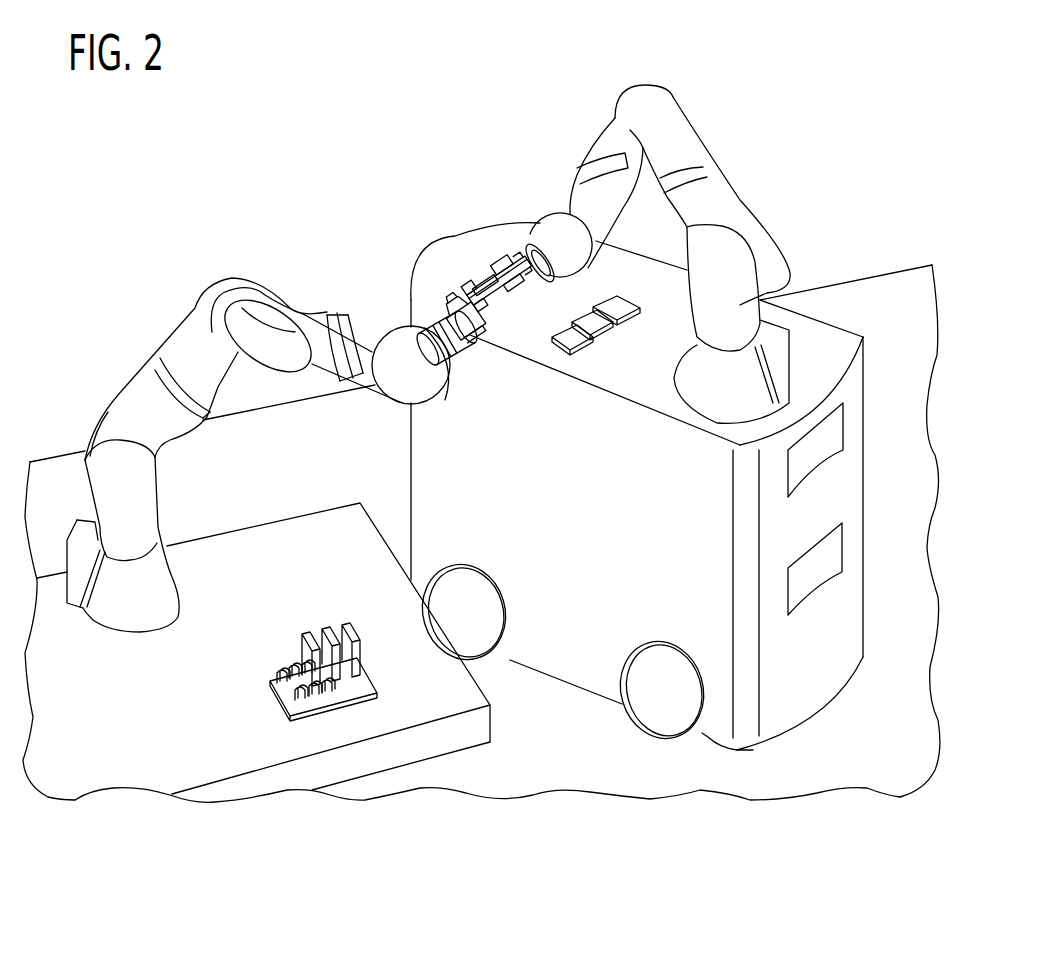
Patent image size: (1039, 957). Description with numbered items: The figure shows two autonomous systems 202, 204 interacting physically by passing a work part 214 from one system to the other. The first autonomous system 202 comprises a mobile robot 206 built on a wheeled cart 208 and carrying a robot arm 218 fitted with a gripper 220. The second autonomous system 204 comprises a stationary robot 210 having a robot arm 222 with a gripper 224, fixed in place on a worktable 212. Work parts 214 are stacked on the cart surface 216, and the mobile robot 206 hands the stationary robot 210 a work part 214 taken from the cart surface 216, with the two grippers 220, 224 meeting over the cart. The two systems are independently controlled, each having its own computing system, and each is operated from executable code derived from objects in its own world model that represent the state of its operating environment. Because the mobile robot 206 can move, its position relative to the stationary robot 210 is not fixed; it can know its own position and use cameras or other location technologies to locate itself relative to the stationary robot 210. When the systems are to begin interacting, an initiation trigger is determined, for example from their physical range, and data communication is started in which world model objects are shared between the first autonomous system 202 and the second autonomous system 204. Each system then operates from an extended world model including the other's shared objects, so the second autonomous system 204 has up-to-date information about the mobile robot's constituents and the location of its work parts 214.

The first autonomous system 202 is at (740, 107).
The second autonomous system 204 is at (150, 292).
The mobile robot 206 is at (757, 195).
The wheeled cart 208 is at (580, 640).
The stationary robot 210 is at (127, 388).
The worktable 212 is at (147, 755).
The work part 214 is at (481, 296).
The cart surface 216 is at (637, 278).
The robot arm 218 is at (560, 232).
The gripper 220 is at (503, 268).
The robot arm 222 is at (402, 360).
The gripper 224 is at (477, 342).